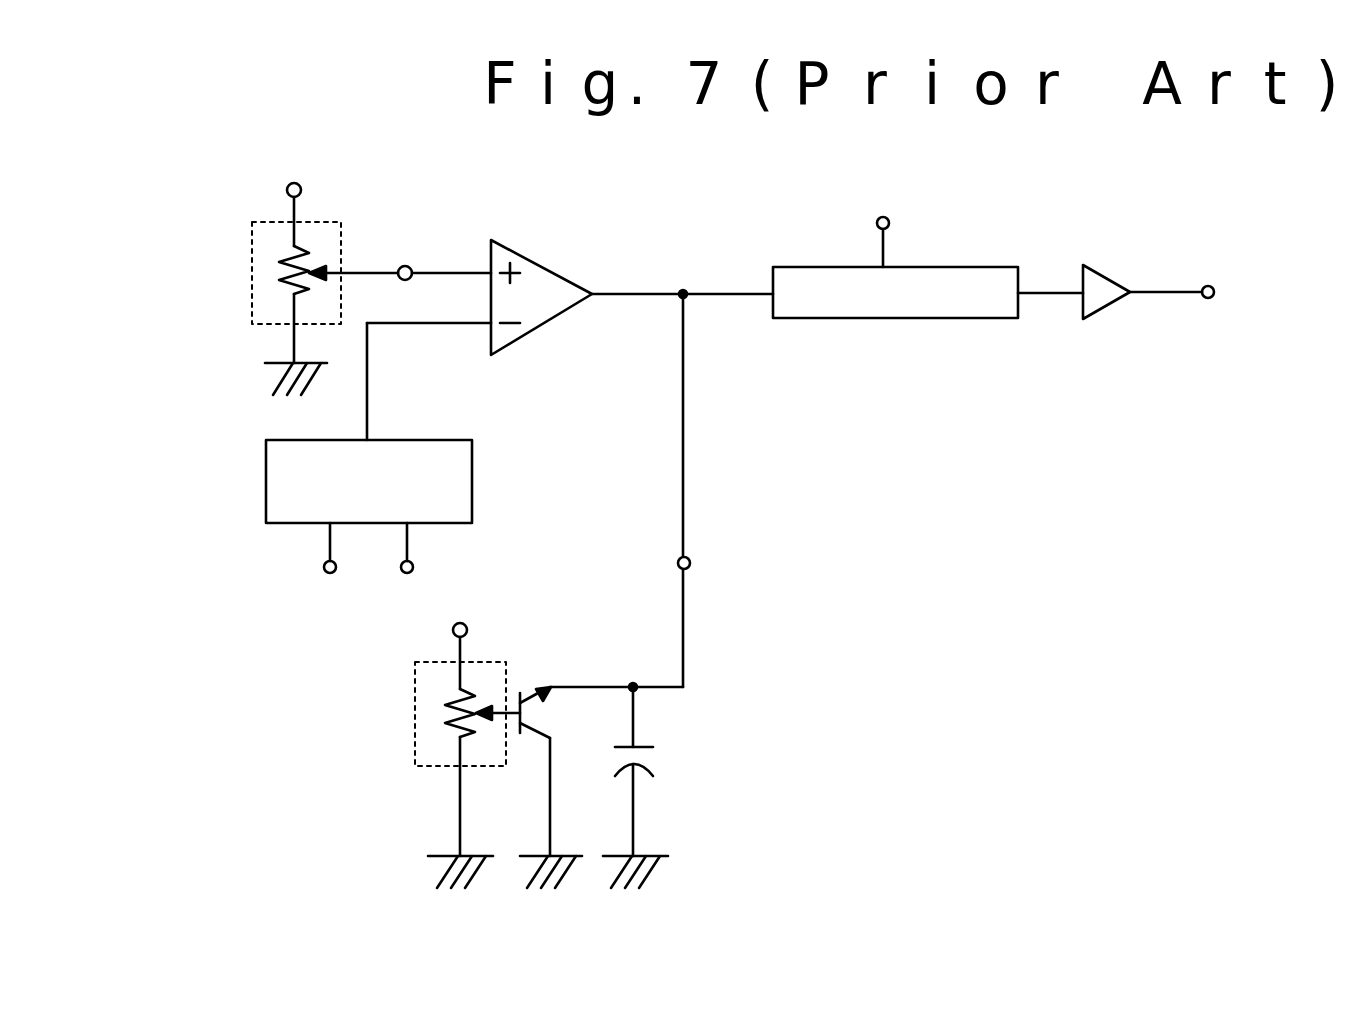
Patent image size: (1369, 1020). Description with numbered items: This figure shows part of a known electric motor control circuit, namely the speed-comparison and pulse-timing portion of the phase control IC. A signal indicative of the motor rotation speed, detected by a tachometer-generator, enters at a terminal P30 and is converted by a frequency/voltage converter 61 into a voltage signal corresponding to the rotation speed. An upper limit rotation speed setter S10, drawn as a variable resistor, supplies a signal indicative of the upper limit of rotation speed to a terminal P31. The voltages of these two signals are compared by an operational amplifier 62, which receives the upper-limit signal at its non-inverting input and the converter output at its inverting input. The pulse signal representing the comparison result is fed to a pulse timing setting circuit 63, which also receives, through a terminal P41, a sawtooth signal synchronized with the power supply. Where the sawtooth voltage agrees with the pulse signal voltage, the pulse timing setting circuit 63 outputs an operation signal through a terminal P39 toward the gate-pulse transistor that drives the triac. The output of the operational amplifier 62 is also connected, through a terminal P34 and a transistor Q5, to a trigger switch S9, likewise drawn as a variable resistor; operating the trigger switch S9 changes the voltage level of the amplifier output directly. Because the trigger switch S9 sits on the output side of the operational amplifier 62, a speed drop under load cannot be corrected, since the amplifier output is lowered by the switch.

The upper limit rotation speed setter S10 is at (280, 289).
The terminal P31 is at (440, 255).
The operational amplifier 62 is at (543, 265).
The pulse timing setting circuit 63 is at (888, 318).
The terminal P41 is at (922, 236).
The terminal P39 is at (1216, 291).
The frequency/voltage converter 61 is at (266, 479).
The terminal P30 is at (290, 554).
The terminal P34 is at (723, 565).
The trigger switch S9 is at (429, 755).
The transistor Q5 is at (539, 787).